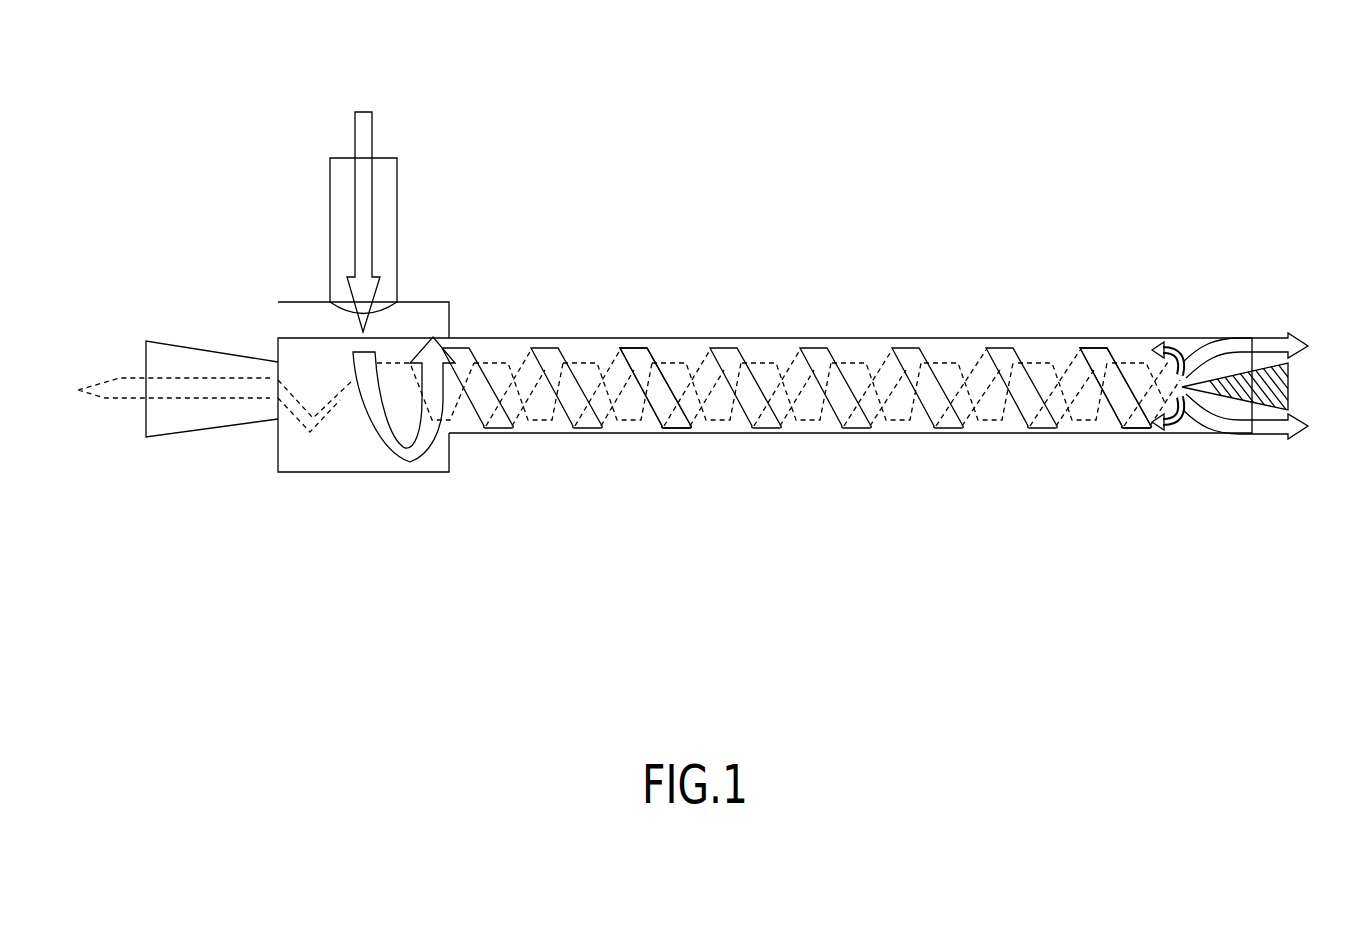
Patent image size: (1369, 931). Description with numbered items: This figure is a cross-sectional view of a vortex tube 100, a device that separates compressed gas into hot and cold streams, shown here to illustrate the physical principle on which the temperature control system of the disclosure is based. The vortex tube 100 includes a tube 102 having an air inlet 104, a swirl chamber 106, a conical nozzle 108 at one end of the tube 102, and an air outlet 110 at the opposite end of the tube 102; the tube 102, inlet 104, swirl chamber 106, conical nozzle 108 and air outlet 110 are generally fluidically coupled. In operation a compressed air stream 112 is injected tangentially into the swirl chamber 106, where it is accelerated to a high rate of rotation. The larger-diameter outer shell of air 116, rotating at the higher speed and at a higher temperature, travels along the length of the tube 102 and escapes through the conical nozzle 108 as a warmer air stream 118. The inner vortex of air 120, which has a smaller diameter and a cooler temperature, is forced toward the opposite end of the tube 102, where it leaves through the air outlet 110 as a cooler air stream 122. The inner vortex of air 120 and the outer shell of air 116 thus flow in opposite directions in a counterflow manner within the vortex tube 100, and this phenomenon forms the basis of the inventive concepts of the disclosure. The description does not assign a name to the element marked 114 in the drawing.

The vortex tube 100 is at (1087, 164).
The tube 102 is at (590, 338).
The air inlet 104 is at (397, 200).
The swirl chamber 106 is at (423, 313).
The conical nozzle 108 is at (1290, 388).
The air outlet 110 is at (145, 362).
The compressed air stream 112 is at (353, 135).
The first screw flight 114 is at (385, 450).
The outer shell of air 116 is at (585, 420).
The warmer air stream 118 is at (1270, 340).
The inner vortex of air 120 is at (878, 400).
The cooler air stream 122 is at (102, 395).